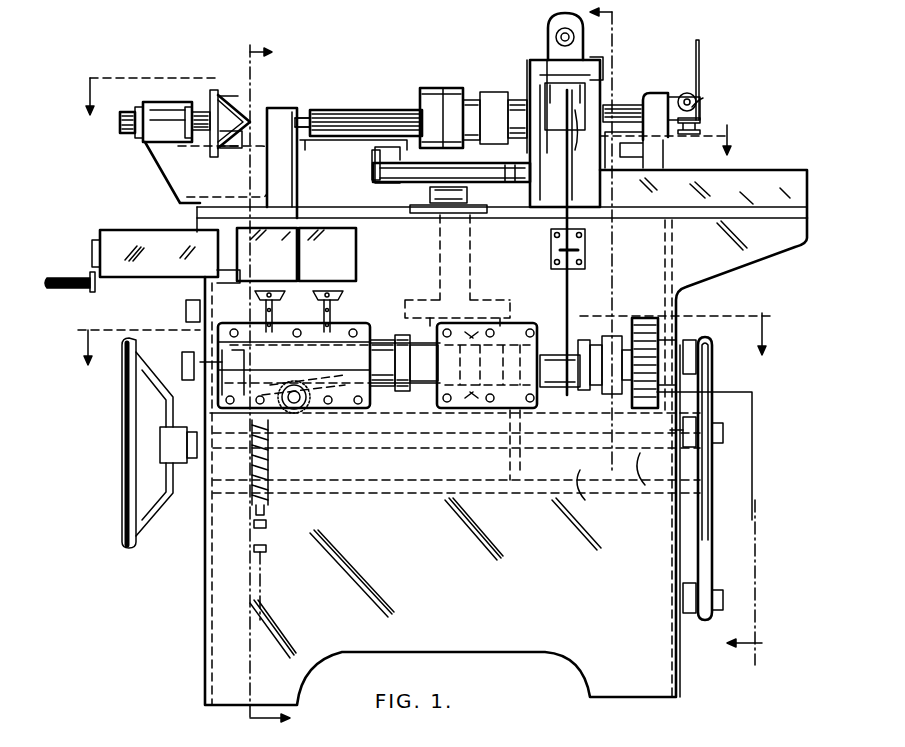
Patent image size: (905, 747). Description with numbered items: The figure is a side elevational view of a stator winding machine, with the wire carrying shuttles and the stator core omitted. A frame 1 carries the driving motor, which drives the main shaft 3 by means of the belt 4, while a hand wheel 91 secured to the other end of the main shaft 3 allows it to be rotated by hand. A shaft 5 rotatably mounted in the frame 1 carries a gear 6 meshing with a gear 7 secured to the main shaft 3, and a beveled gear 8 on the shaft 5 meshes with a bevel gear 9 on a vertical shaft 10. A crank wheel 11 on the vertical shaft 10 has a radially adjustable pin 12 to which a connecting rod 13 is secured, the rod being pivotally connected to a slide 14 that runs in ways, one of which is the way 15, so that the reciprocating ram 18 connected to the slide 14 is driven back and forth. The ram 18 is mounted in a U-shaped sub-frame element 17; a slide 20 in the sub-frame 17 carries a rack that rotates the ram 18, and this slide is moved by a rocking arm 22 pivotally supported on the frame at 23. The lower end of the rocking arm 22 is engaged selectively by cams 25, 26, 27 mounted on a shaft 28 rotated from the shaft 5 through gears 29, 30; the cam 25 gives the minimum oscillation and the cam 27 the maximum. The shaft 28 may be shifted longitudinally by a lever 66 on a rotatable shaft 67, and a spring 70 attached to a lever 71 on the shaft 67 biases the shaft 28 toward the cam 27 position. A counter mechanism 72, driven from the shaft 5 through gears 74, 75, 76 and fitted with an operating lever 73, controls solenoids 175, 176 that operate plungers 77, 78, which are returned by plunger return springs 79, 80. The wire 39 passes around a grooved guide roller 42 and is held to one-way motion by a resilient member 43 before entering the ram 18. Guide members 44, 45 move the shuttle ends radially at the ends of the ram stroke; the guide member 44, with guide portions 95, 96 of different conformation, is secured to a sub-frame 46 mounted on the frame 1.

The frame 1 is at (556, 640).
The main shaft 3 is at (677, 333).
The belt 4 is at (724, 528).
The shaft 5 is at (399, 113).
The gear 6 is at (632, 333).
The gear 7 is at (424, 400).
The beveled gear 8 is at (480, 396).
The bevel gear 9 is at (465, 330).
The vertical shaft 10 is at (467, 193).
The crank wheel 11 is at (408, 182).
The radially adjustable pin 12 is at (375, 152).
The connecting rod 13 is at (513, 182).
The slide 14 is at (663, 155).
The way 15 is at (775, 170).
The U-shaped sub-frame element 17 is at (530, 90).
The reciprocating ram 18 is at (378, 112).
The slide 20 is at (582, 145).
The rocking arm 22 is at (566, 226).
The pivot 23 is at (551, 250).
The cam 25 is at (583, 340).
The cam 26 is at (596, 345).
The cam 27 is at (612, 336).
The shaft 28 is at (548, 387).
The gear 29 is at (380, 386).
The gear 30 is at (400, 386).
The wire 39 is at (700, 53).
The grooved guide roller 42 is at (687, 94).
The member 43 is at (703, 108).
The guide member 44 is at (222, 108).
The guide member 45 is at (452, 88).
The sub-frame 46 is at (163, 165).
The lever 66 is at (345, 400).
The rotatable shaft 67 is at (294, 410).
The spring 70 is at (270, 495).
The lever 71 is at (250, 410).
The counter mechanism 72 is at (118, 230).
The operating lever 73 is at (90, 273).
The gear 74 is at (207, 270).
The gear 75 is at (222, 355).
The gear 76 is at (186, 311).
The plunger 77 is at (285, 296).
The plunger 78 is at (343, 296).
The plunger return spring 79 is at (272, 316).
The plunger return spring 80 is at (330, 316).
The hand wheel 91 is at (128, 470).
The guide portion 95 is at (230, 148).
The guide portion 96 is at (245, 98).
The solenoid 175 is at (267, 254).
The solenoid 176 is at (327, 254).